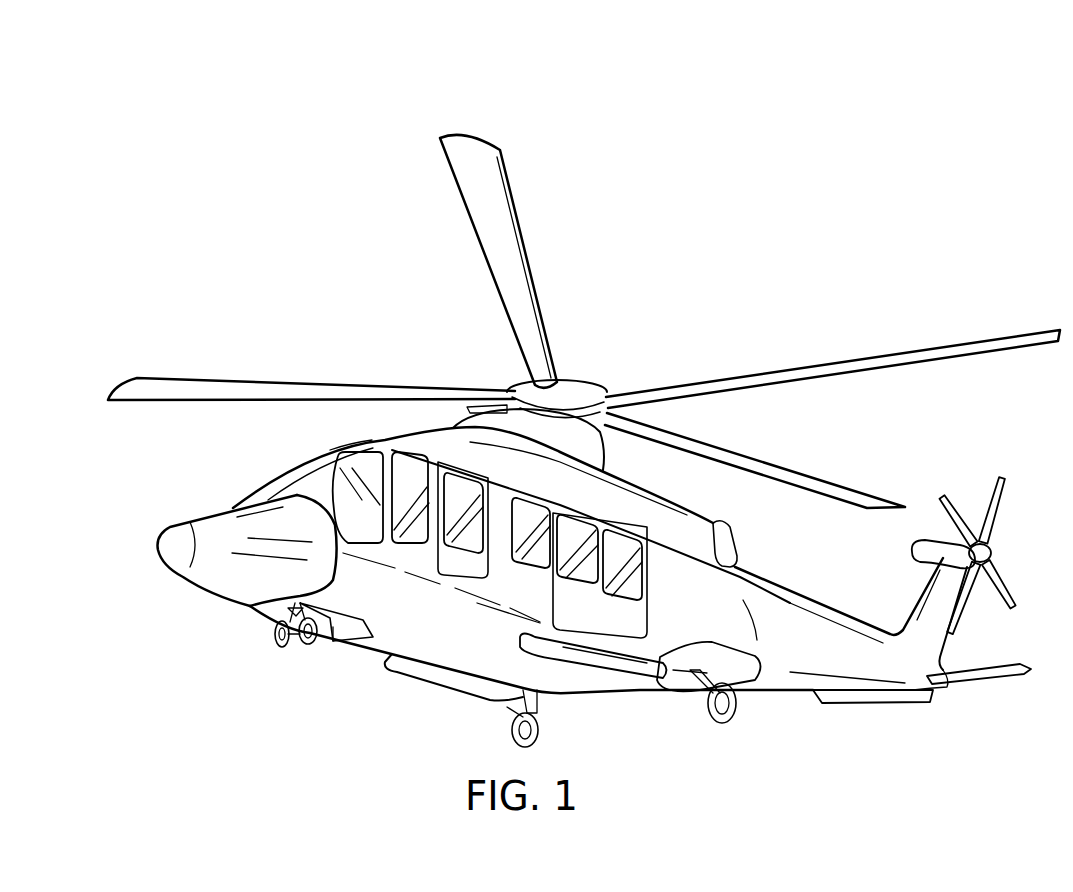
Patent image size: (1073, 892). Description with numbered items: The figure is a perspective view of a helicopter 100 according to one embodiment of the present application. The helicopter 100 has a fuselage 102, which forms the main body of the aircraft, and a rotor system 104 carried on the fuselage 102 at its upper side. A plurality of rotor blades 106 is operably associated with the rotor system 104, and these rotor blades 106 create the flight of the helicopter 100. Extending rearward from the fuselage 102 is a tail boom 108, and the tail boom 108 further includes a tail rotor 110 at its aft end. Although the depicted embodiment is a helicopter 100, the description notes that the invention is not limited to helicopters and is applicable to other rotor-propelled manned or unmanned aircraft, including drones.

The helicopter 100 is at (257, 122).
The fuselage 102 is at (383, 653).
The rotor system 104 is at (592, 357).
The rotor blades 106 is at (818, 377).
The tail boom 108 is at (790, 670).
The tail rotor 110 is at (993, 525).